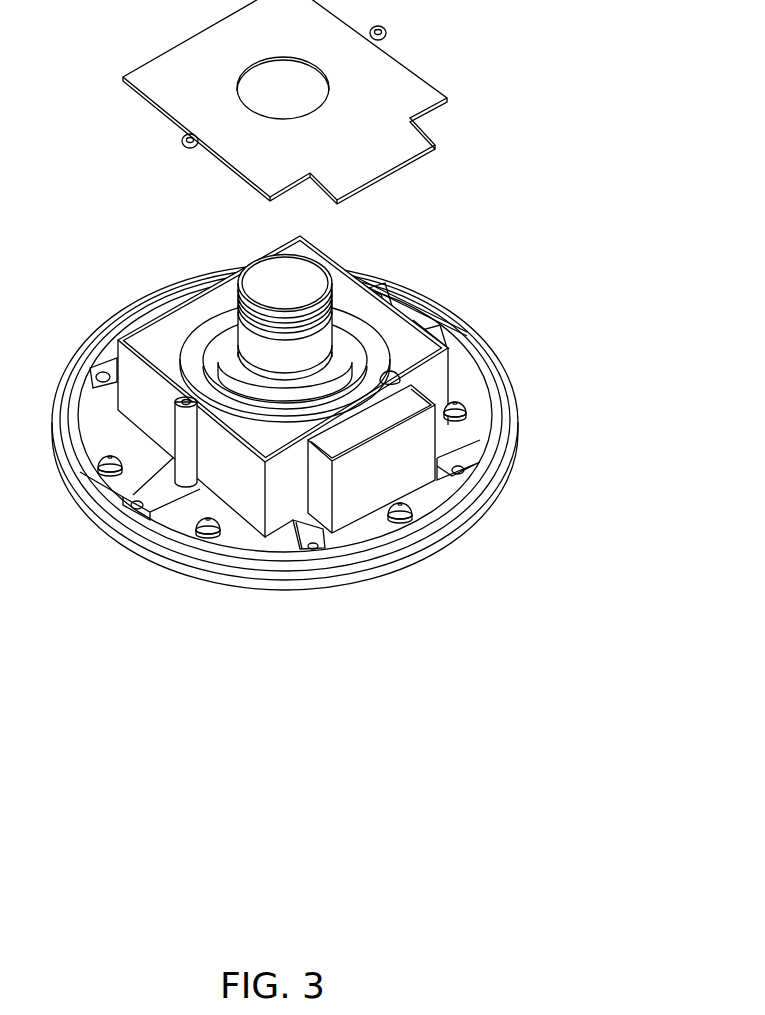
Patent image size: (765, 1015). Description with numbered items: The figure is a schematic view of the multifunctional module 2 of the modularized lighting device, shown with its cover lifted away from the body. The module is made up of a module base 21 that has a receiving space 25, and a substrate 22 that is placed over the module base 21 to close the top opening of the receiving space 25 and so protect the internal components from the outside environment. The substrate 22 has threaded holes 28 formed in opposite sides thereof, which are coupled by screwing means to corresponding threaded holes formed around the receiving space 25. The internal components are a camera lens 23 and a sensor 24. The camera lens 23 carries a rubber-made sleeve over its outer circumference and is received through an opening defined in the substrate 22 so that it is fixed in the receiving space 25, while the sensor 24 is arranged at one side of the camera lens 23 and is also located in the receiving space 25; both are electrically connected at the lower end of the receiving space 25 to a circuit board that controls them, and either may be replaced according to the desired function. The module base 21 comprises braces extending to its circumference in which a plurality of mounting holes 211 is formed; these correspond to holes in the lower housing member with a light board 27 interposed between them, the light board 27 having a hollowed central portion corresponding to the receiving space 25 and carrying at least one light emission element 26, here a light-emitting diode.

The multifunctional module 2 is at (60, 492).
The module base 21 is at (413, 558).
The mounting holes 211 is at (462, 472).
The substrate 22 is at (137, 70).
The camera lens 23 is at (276, 283).
The sensor 24 is at (390, 413).
The receiving space 25 is at (350, 298).
The light emission element 26 is at (157, 518).
The light board 27 is at (255, 542).
The threaded holes 28 is at (380, 27).